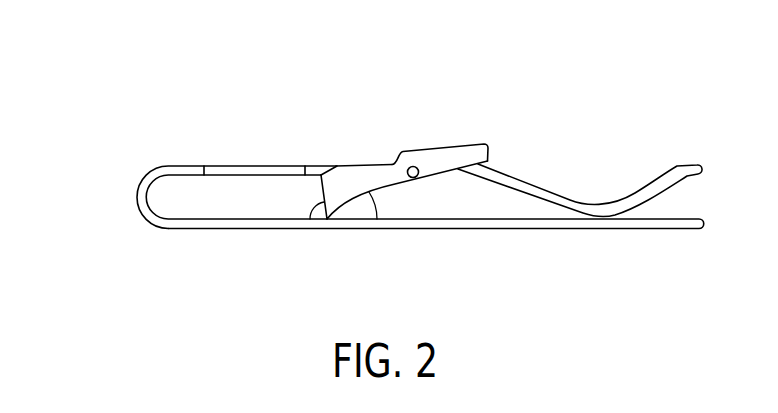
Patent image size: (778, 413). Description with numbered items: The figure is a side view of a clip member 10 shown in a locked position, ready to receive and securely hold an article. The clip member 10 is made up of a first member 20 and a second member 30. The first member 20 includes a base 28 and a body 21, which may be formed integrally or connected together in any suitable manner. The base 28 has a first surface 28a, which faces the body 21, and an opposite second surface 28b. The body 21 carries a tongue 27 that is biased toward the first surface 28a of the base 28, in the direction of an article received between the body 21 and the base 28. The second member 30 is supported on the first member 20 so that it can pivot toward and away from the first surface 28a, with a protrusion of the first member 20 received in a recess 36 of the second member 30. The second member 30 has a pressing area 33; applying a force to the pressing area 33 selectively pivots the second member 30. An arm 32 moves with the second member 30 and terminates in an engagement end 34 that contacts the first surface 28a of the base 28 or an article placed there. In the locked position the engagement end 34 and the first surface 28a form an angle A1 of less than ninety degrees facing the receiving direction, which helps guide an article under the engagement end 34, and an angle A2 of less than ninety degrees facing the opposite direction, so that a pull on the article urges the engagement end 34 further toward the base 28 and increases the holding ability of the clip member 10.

The clip member 10 is at (96, 71).
The first member 20 is at (255, 131).
The body 21 is at (290, 165).
The tongue 27 is at (543, 192).
The base 28 is at (273, 221).
The first surface 28a is at (218, 220).
The second surface 28b is at (397, 229).
The second member 30 is at (449, 90).
The arm 32 is at (350, 174).
The pressing area 33 is at (470, 144).
The engagement end 34 is at (326, 219).
The recess 36 is at (413, 166).
The angle A1 is at (376, 205).
The angle A2 is at (308, 208).